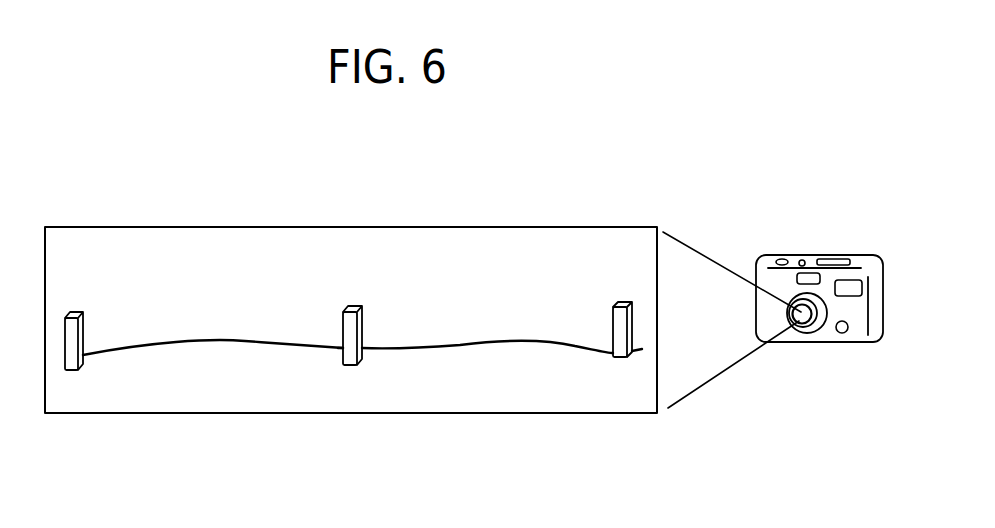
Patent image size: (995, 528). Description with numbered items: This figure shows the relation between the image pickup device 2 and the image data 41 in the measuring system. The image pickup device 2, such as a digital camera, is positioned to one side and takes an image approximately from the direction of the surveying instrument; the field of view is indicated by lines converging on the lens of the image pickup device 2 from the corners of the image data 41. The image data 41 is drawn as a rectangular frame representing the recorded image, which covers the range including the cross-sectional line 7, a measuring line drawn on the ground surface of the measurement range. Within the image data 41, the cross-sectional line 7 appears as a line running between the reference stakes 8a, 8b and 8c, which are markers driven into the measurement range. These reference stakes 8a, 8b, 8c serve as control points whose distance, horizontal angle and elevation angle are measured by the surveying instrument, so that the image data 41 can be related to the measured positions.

The image data 41 is at (510, 227).
The cross-sectional line 7 is at (496, 342).
The reference stake 8a is at (86, 325).
The reference stake 8b is at (364, 320).
The reference stake 8c is at (623, 303).
The image pickup device 2 is at (836, 255).